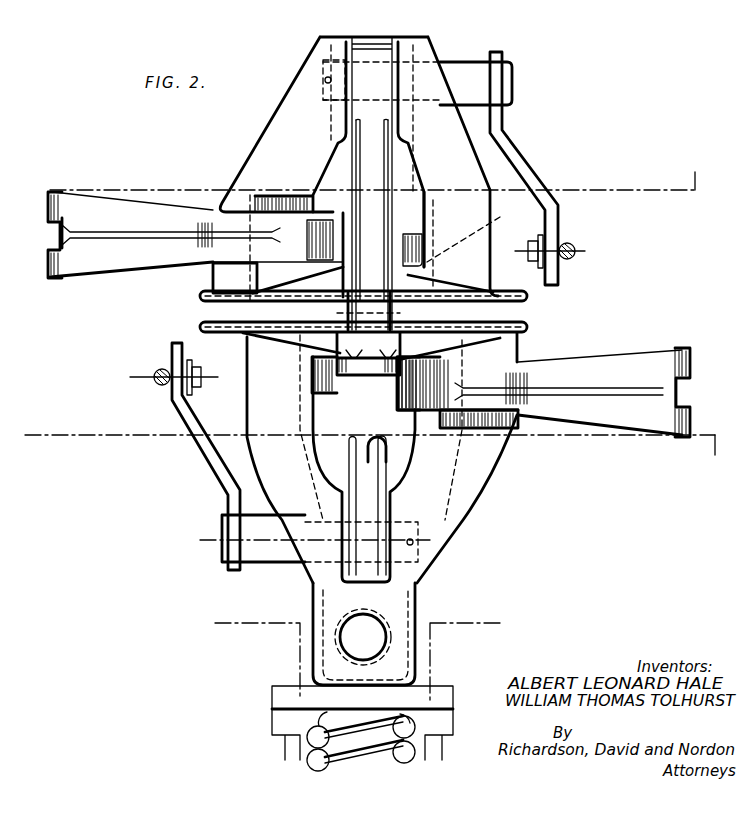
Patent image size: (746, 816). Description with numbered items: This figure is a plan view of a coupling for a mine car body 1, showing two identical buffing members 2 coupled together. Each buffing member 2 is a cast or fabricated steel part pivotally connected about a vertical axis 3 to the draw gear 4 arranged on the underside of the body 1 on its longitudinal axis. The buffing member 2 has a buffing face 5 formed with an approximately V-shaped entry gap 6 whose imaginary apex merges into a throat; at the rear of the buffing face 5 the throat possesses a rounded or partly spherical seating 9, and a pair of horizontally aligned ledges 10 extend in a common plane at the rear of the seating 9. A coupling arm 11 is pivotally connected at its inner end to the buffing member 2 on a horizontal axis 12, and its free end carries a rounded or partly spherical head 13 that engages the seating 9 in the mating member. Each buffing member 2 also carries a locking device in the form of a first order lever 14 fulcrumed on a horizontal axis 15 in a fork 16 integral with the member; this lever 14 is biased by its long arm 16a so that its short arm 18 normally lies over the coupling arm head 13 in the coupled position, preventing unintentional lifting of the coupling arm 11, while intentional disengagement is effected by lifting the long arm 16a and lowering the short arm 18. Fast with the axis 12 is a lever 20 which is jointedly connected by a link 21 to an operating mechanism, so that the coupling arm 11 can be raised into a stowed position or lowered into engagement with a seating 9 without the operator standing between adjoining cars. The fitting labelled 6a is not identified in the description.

The mine car body 1 is at (654, 180).
The buffing member 2 is at (460, 135).
The vertical axis 3 is at (372, 637).
The draw gear 4 is at (260, 686).
The buffing face 5 is at (497, 304).
The entry gap 6 is at (418, 280).
The rod end fitting 6a is at (72, 220).
The seating 9 is at (345, 400).
The ledges 10 is at (292, 195).
The coupling arm 11 is at (367, 202).
The horizontal axis 12 is at (407, 62).
The head 13 is at (362, 362).
The lever 14 is at (133, 275).
The horizontal axis 15 is at (425, 411).
The fork 16 is at (286, 199).
The long arm 16a is at (610, 365).
The short arm 18 is at (362, 313).
The lever 20 is at (533, 180).
The link 21 is at (568, 245).